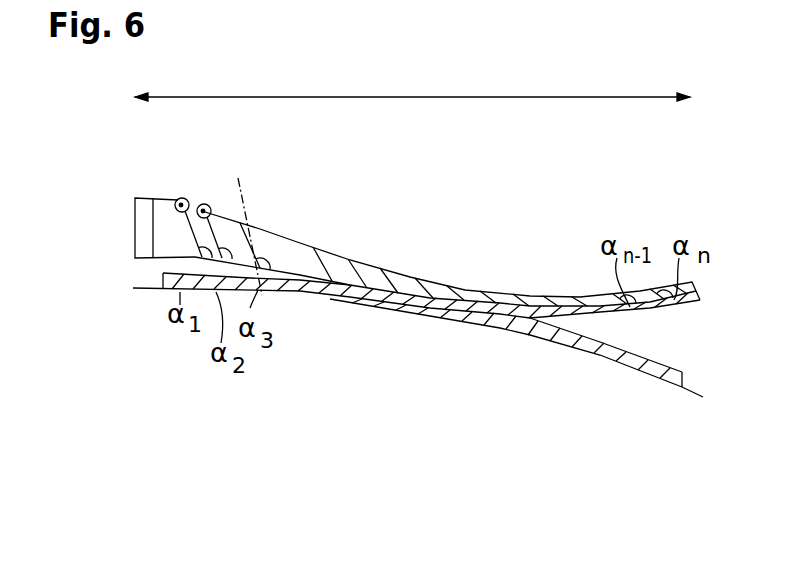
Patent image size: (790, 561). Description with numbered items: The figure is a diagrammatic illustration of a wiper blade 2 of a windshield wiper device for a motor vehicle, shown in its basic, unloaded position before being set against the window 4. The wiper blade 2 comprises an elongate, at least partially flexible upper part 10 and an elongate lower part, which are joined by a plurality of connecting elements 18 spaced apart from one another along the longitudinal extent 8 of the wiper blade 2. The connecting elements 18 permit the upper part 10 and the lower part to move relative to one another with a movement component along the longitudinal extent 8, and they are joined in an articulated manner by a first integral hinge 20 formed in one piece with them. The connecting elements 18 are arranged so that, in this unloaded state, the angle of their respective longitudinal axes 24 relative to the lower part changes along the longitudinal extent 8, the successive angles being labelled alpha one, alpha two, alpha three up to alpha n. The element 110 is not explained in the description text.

The wiper blade 2 is at (431, 222).
The window 4 is at (572, 348).
The longitudinal extent 8 is at (413, 97).
The upper part 10 is at (518, 297).
The connecting elements 18 is at (332, 262).
The first integral hinge 20 is at (183, 198).
The longitudinal axes 24 is at (261, 182).
The holder 110 is at (135, 238).